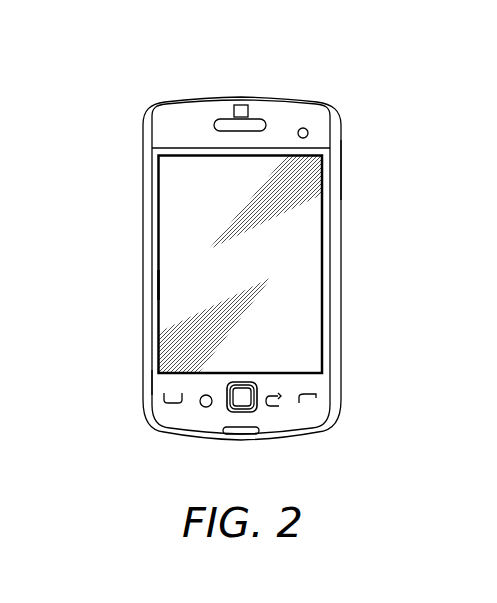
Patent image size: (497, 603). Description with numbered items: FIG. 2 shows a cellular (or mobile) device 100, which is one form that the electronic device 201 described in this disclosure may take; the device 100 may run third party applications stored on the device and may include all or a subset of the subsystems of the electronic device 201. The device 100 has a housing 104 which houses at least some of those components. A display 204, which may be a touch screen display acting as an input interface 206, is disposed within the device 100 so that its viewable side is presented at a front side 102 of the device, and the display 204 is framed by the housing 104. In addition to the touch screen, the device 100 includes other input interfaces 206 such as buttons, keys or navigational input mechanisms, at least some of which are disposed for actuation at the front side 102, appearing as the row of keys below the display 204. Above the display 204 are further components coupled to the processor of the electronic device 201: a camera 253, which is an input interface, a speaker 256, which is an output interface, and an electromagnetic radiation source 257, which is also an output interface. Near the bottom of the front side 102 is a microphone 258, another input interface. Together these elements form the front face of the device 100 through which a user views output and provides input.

The cellular mobile device 100 is at (131, 96).
The electronic device 201 is at (177, 66).
The housing 104 is at (342, 165).
The front side 102 is at (161, 383).
The display 204 is at (158, 208).
The input interfaces 206 is at (158, 287).
The camera 253 is at (241, 105).
The speaker 256 is at (264, 117).
The electromagnetic radiation source 257 is at (309, 132).
The microphone 258 is at (238, 434).